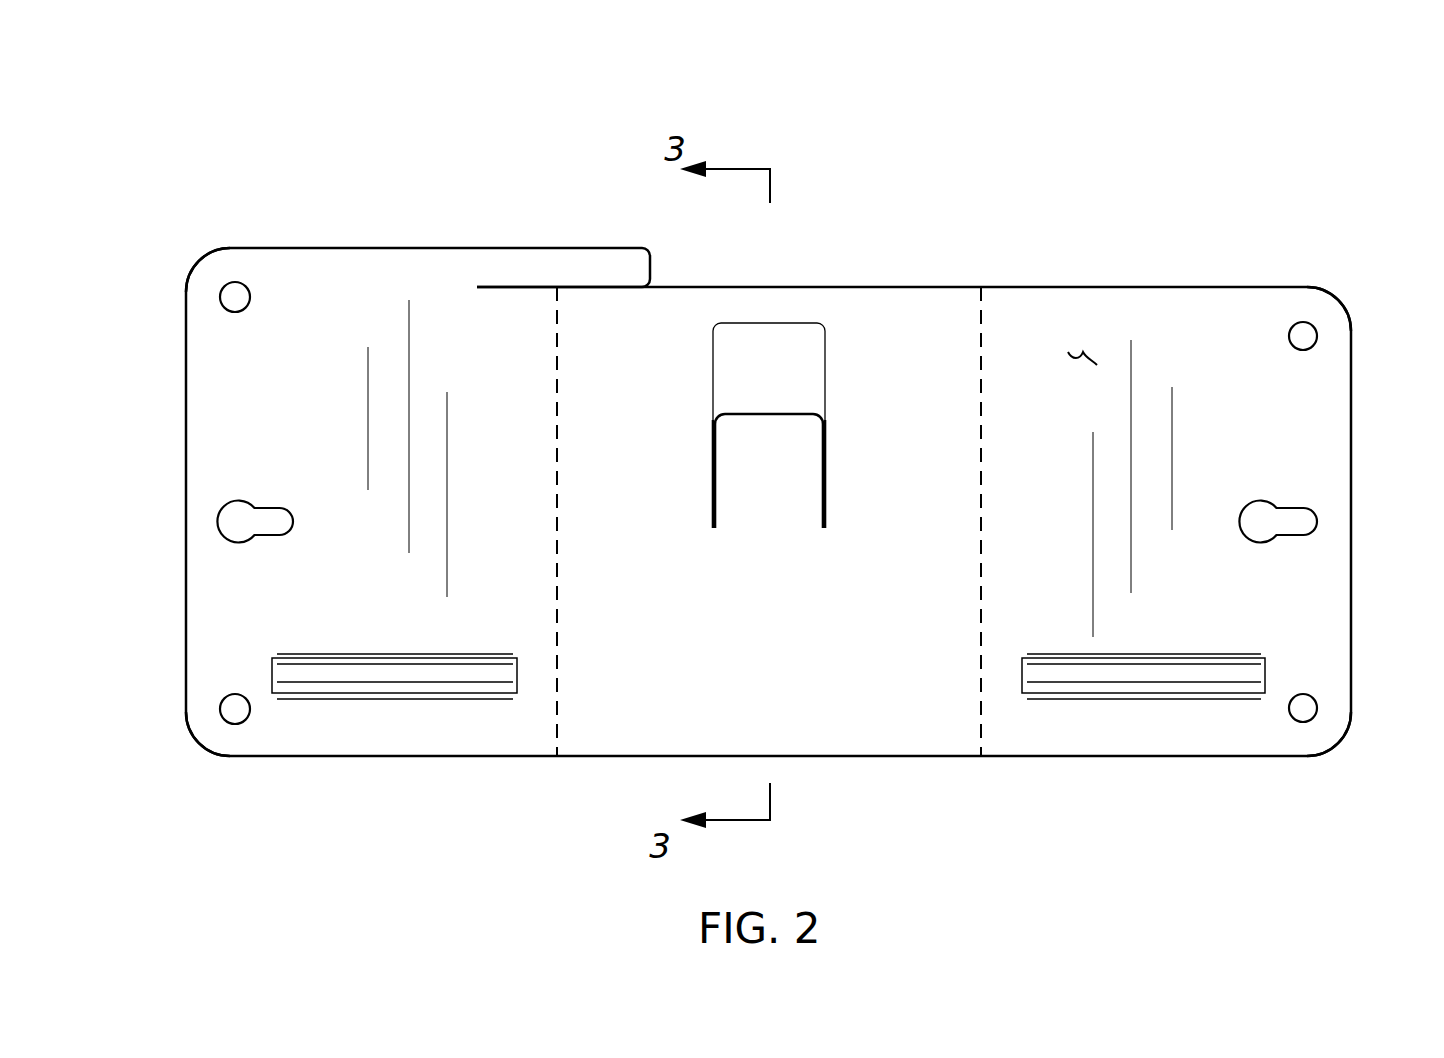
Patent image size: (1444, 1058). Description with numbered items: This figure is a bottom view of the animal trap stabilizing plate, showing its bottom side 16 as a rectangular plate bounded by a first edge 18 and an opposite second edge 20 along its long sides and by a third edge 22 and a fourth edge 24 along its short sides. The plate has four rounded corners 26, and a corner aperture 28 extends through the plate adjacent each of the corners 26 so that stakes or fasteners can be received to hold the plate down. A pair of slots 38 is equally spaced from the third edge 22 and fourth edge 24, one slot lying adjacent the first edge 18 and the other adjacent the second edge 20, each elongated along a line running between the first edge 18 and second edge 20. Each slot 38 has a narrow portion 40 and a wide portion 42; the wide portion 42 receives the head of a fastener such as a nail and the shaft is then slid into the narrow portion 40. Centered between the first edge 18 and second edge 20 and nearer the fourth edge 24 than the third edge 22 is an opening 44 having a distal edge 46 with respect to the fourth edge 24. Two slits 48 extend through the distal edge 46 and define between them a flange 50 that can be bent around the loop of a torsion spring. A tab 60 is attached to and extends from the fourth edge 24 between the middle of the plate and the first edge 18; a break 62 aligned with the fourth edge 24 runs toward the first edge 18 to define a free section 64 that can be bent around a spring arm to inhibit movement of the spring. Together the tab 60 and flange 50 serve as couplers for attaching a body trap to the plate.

The bottom side 16 is at (1084, 350).
The first edge 18 is at (186, 437).
The second edge 20 is at (1351, 450).
The third edge 22 is at (932, 756).
The fourth edge 24 is at (950, 287).
The corners 26 is at (198, 265).
The corner apertures 28 is at (247, 284).
The slots 38 is at (217, 522).
The narrow portion 40 is at (229, 556).
The wide portion 42 is at (276, 556).
The opening 44 is at (786, 320).
The distal edge 46 is at (780, 413).
The slits 48 is at (713, 488).
The flange 50 is at (770, 467).
The tab 60 is at (602, 248).
The break 62 is at (510, 287).
The free section 64 is at (648, 268).